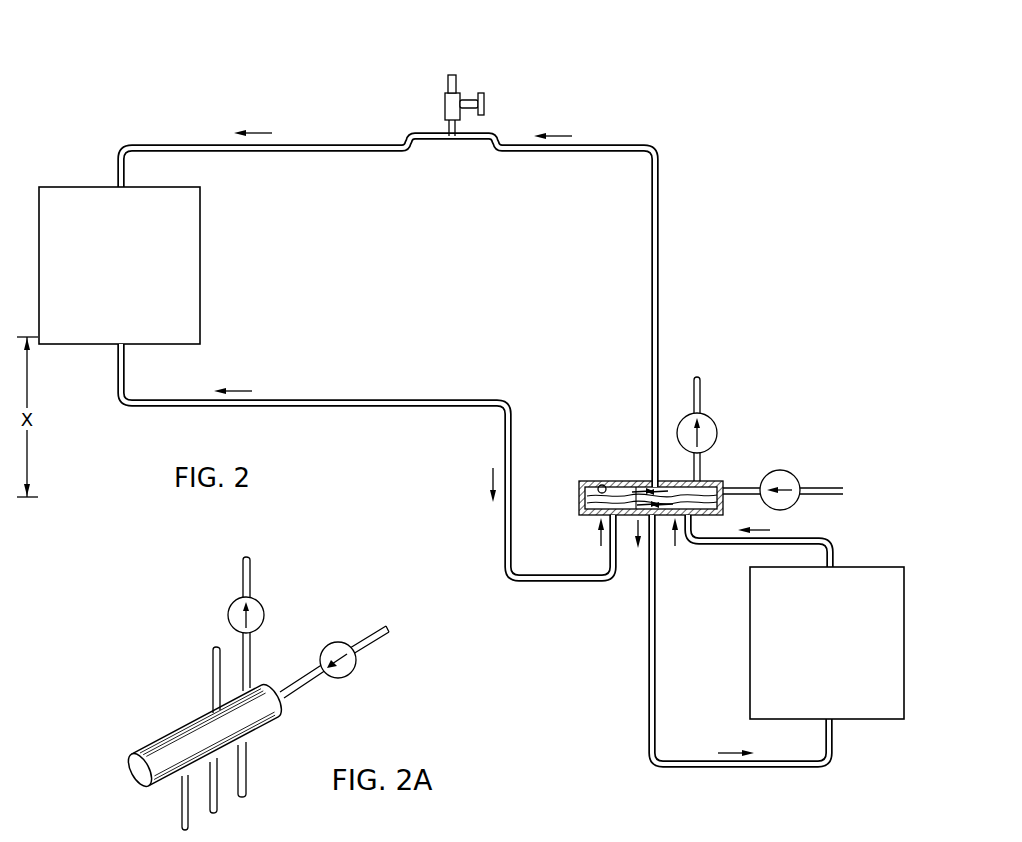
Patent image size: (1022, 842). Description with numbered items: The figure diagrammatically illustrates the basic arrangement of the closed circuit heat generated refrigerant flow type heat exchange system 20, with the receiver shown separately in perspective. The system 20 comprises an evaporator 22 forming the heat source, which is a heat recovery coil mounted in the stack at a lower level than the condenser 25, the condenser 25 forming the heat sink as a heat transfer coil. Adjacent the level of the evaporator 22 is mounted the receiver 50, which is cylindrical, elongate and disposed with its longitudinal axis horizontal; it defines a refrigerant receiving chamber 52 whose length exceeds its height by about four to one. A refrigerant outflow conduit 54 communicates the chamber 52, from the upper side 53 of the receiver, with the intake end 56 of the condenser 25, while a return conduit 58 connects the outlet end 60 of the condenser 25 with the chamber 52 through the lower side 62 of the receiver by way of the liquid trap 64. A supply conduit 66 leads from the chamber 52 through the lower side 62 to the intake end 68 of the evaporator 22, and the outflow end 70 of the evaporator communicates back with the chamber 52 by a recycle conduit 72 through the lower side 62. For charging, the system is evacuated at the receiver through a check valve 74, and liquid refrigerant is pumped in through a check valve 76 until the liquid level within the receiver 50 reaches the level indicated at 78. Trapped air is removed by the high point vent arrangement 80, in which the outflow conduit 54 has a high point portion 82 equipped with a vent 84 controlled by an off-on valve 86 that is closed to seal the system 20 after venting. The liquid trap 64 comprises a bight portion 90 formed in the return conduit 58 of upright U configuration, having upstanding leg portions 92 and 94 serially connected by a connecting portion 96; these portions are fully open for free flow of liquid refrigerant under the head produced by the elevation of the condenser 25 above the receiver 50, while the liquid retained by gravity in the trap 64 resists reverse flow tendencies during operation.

In FIG. 2, the heat exchange system 20 is at (684, 207).
In FIG. 2, the evaporator 22 is at (884, 559).
In FIG. 2, the condenser 25 is at (208, 258).
In FIG. 2, the receiver 50 is at (727, 472).
In FIG. 2, the refrigerant receiving chamber 52 is at (610, 481).
In FIG. 2, the upper side of the receiver 53 is at (636, 481).
In FIG. 2, the refrigerant outflow conduit 54 is at (658, 343).
In FIG. 2A, the refrigerant outflow conduit 54 is at (212, 668).
In FIG. 2, the intake end of the condenser 56 is at (110, 186).
In FIG. 2, the return conduit 58 is at (325, 407).
In FIG. 2, the outlet end of the condenser 60 is at (113, 346).
In FIG. 2A, the outlet end of the condenser 60 is at (220, 798).
In FIG. 2, the lower side of the receiver 62 is at (641, 520).
In FIG. 2, the liquid trap 64 is at (492, 554).
In FIG. 2, the supply conduit 66 is at (648, 723).
In FIG. 2, the intake end of the evaporator 68 is at (835, 714).
In FIG. 2, the outflow end of the evaporator 70 is at (830, 572).
In FIG. 2, the recycle conduit 72 is at (792, 540).
In FIG. 2A, the recycle conduit 72 is at (248, 758).
In FIG. 2, the check valve 74 is at (708, 418).
In FIG. 2A, the check valve 74 is at (263, 608).
In FIG. 2, the check valve 76 is at (795, 478).
In FIG. 2A, the check valve 76 is at (357, 667).
In FIG. 2, the liquid level 78 is at (587, 480).
In FIG. 2, the high point vent arrangement 80 is at (514, 125).
In FIG. 2, the high point portion 82 is at (425, 132).
In FIG. 2, the vent 84 is at (460, 80).
In FIG. 2, the off-on valve 86 is at (492, 88).
In FIG. 2, the bight portion 90 is at (512, 588).
In FIG. 2, the upstanding leg portion 92 is at (504, 523).
In FIG. 2, the upstanding leg portion 94 is at (610, 560).
In FIG. 2A, the upstanding leg portion 94 is at (182, 812).
In FIG. 2, the connecting portion 96 is at (568, 588).